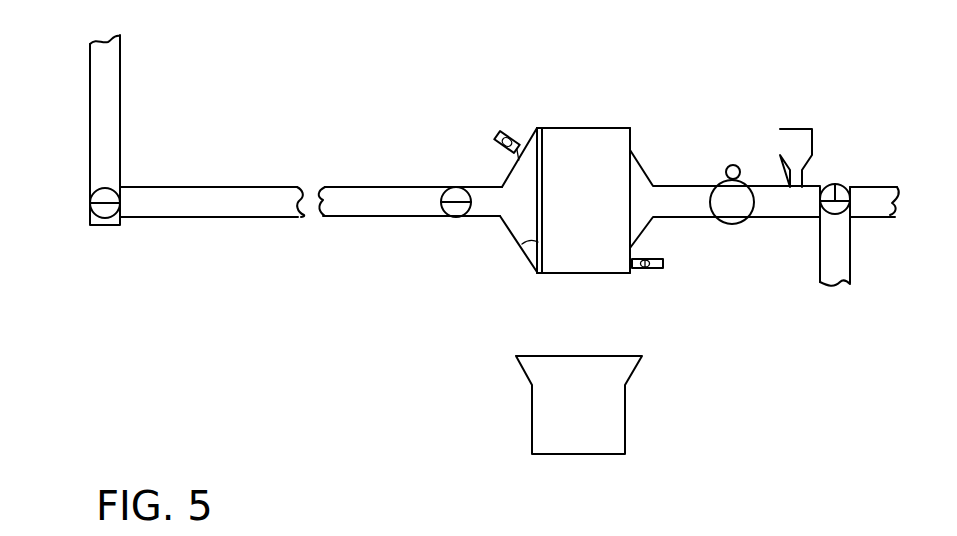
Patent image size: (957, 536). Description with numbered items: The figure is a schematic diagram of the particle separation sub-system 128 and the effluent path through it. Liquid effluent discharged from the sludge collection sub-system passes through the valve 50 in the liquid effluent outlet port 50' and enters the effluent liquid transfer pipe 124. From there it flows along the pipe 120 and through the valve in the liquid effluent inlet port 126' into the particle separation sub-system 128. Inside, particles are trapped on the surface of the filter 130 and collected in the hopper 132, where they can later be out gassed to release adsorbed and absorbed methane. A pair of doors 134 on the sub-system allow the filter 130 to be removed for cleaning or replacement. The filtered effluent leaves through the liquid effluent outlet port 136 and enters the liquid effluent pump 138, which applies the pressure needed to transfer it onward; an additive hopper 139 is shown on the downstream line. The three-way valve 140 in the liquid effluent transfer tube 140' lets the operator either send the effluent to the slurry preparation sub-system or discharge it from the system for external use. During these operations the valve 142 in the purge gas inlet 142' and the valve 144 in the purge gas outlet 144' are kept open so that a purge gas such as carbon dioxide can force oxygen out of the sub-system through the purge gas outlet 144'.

The valve 50 is at (83, 188).
The liquid effluent outlet port 50' is at (81, 130).
The effluent liquid transfer pipe 124 is at (173, 195).
The inlet pipe 120 is at (440, 203).
The liquid effluent inlet port 126' is at (478, 191).
The filter 130 is at (531, 246).
The valve 144 is at (485, 123).
The purge gas outlet 144' is at (485, 153).
The particle separation sub-system 128 is at (566, 142).
The doors 134 is at (605, 127).
The liquid effluent outlet port 136 is at (641, 169).
The valve 142 is at (671, 248).
The purge gas inlet 142' is at (667, 283).
The liquid effluent pump 138 is at (722, 190).
The additive hopper 139 is at (811, 142).
The three-way valve 140 is at (860, 218).
The liquid effluent transfer tube 140' is at (888, 223).
The hopper 132 is at (543, 433).